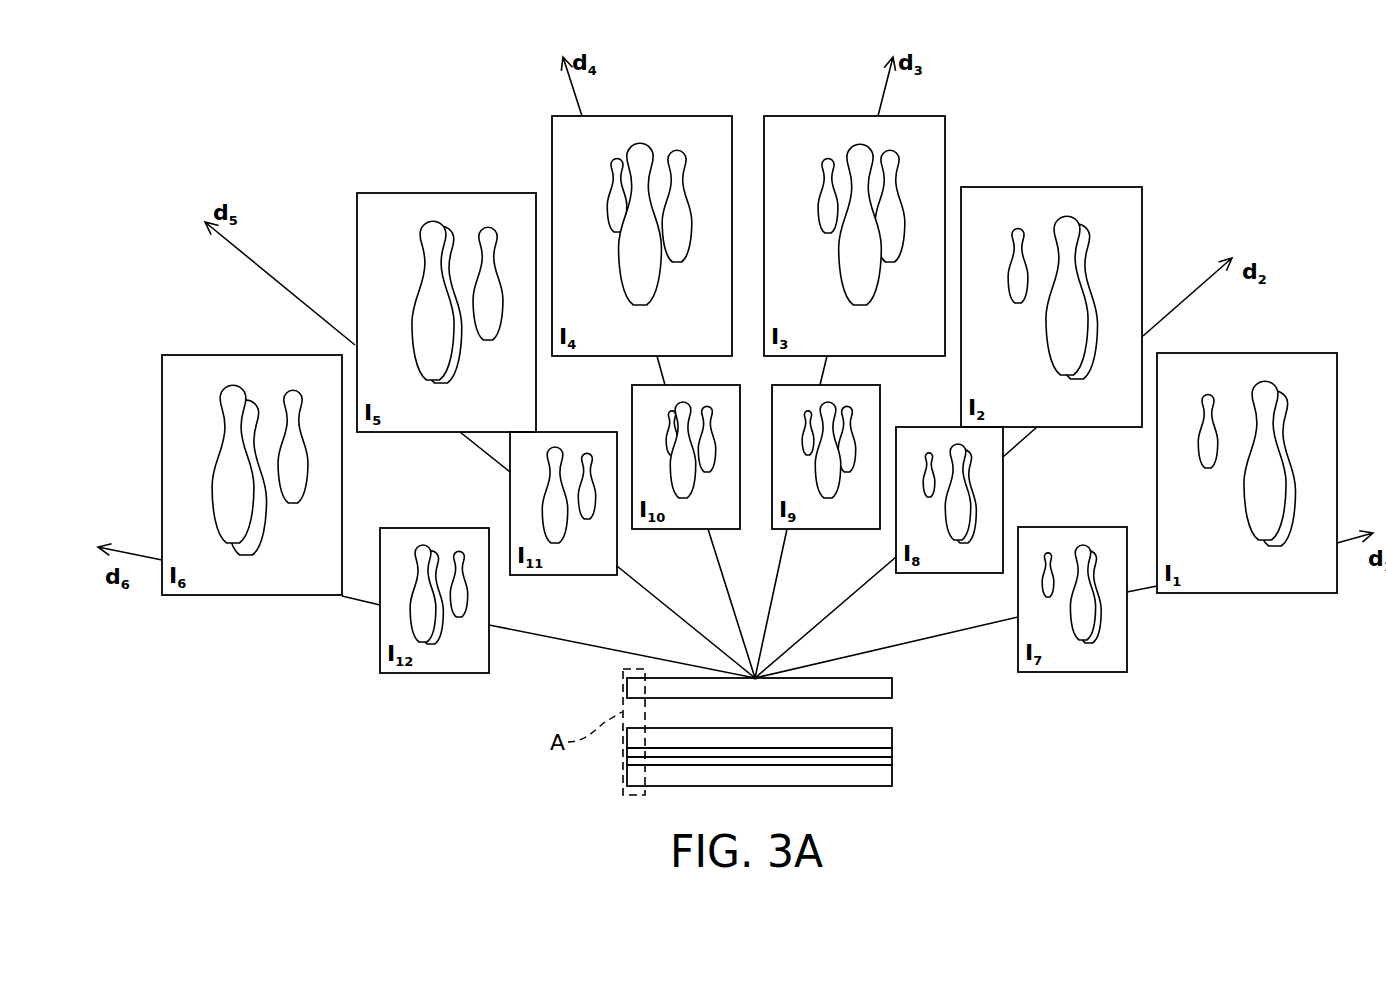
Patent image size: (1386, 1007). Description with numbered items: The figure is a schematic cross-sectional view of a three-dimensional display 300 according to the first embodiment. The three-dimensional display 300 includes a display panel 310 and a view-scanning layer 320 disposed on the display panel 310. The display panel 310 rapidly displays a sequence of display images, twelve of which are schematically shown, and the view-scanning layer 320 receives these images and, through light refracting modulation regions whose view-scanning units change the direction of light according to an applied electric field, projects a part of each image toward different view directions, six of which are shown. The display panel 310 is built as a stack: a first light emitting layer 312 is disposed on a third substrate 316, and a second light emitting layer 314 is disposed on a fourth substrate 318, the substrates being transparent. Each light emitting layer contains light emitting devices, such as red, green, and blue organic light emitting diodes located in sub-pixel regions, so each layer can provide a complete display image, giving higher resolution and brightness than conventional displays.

The 3D-display 300 is at (942, 765).
The display panel 310 is at (827, 790).
The first light emitting layer 312 is at (883, 763).
The second light emitting layer 314 is at (883, 752).
The third substrate 316 is at (803, 809).
The fourth substrate 318 is at (883, 740).
The view-scanning layer 320 is at (880, 692).